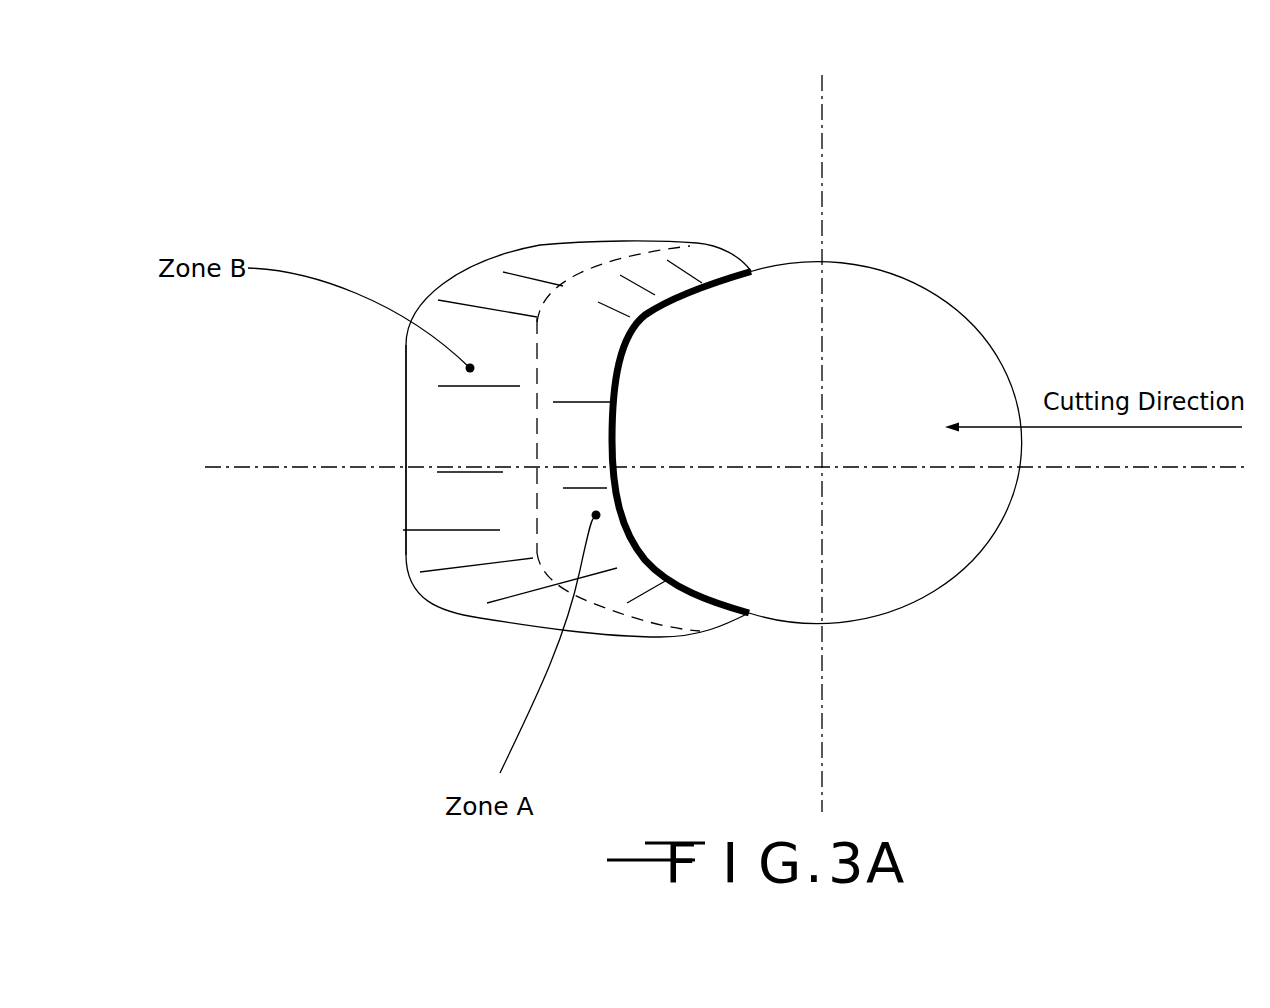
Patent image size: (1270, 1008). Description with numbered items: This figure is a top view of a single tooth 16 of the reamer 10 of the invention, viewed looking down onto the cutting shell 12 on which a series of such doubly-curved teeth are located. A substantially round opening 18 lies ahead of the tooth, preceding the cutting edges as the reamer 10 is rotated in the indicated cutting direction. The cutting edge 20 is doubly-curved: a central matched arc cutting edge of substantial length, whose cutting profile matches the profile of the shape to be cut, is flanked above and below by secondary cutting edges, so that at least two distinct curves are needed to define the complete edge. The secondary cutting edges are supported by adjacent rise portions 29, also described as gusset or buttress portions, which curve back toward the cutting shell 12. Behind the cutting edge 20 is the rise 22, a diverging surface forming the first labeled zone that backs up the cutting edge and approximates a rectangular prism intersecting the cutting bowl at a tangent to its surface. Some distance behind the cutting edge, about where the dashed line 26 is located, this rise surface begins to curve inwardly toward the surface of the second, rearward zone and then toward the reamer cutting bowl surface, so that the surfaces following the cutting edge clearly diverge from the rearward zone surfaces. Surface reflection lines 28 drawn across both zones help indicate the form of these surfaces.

The reamer 10 is at (1176, 147).
The cutting shell 12 is at (853, 175).
The tooth 16 is at (500, 453).
The opening 18 is at (996, 545).
The cutting edge 20 is at (624, 408).
The rise 22 is at (444, 511).
The dashed line 26 is at (533, 577).
The surface reflection lines 28 is at (547, 281).
The rise portion 29 is at (661, 594).